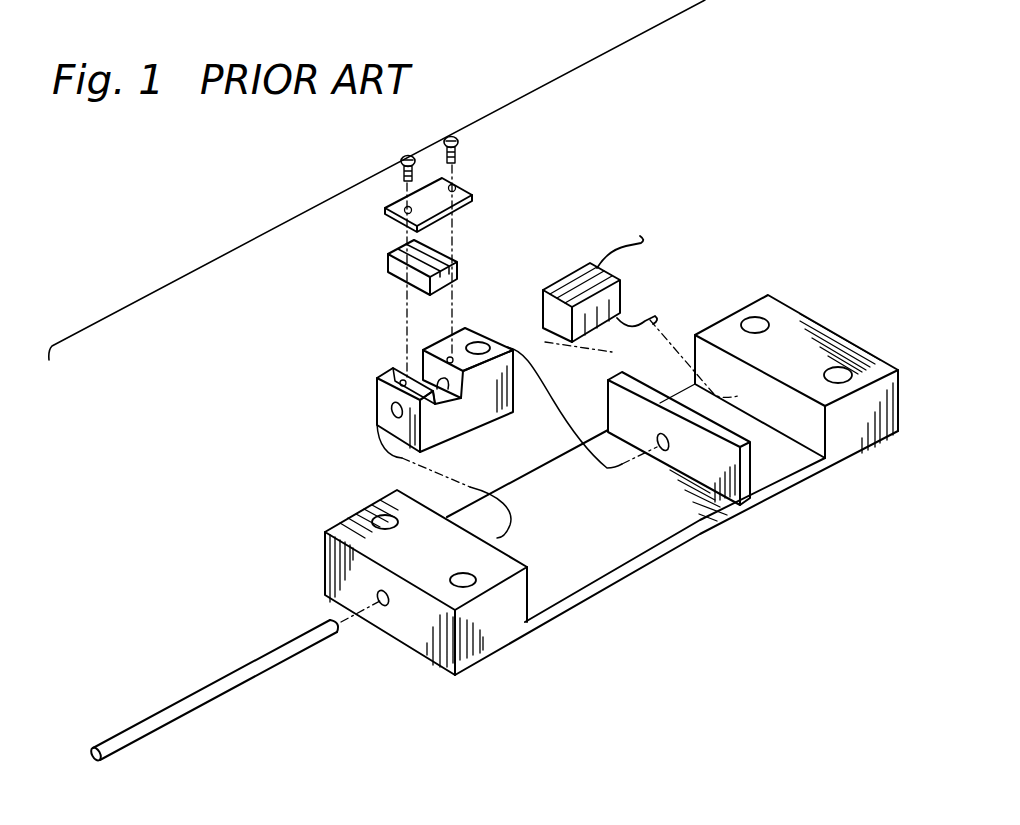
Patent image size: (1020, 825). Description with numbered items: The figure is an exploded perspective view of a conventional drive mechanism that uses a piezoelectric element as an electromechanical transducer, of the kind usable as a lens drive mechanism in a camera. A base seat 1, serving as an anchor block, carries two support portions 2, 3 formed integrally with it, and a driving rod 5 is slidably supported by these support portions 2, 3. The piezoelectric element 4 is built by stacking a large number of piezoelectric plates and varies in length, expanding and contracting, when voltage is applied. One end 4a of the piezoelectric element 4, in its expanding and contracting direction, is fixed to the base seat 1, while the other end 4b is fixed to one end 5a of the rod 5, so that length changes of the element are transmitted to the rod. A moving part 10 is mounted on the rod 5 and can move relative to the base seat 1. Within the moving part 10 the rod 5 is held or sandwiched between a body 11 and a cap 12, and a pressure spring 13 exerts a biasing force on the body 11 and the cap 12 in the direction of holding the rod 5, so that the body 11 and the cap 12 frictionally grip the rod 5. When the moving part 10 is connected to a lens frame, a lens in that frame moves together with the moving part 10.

The base seat 1 is at (717, 321).
The support portion 2 is at (748, 468).
The support portion 3 is at (513, 607).
The piezoelectric element 4 is at (560, 272).
The one end of the piezoelectric element 4a is at (650, 307).
The other end of the piezoelectric element 4b is at (553, 312).
The driving rod 5 is at (228, 672).
The one end of the driving rod 5a is at (338, 632).
The moving part 10 is at (377, 192).
The body 11 is at (477, 410).
The cap 12 is at (397, 268).
The pressure spring 13 is at (468, 193).